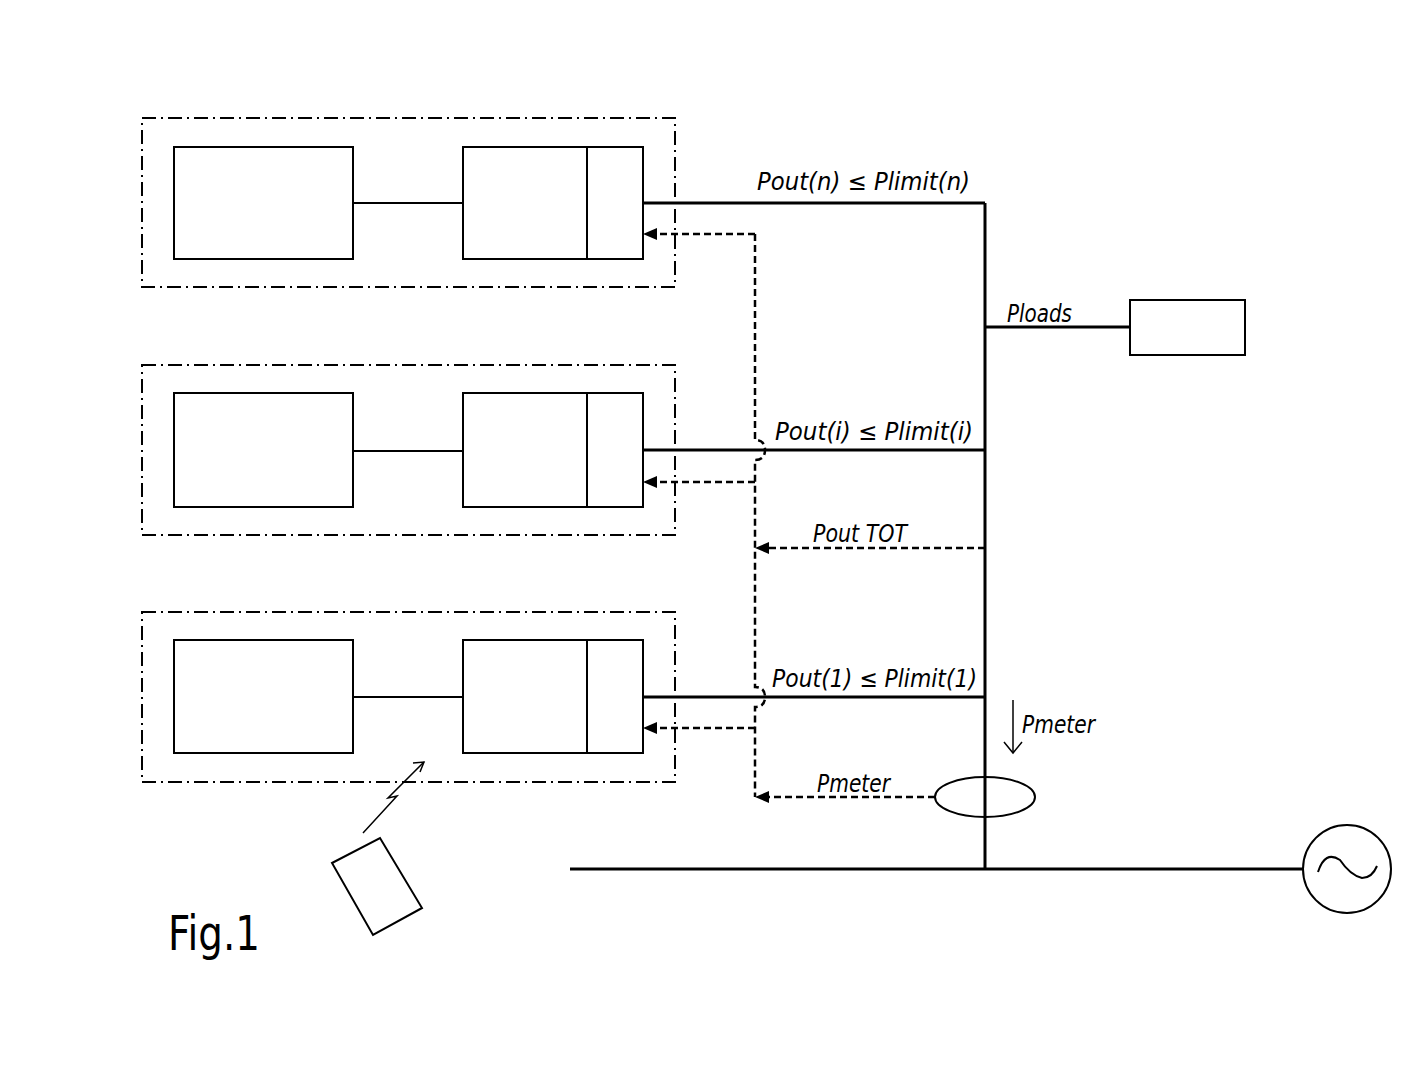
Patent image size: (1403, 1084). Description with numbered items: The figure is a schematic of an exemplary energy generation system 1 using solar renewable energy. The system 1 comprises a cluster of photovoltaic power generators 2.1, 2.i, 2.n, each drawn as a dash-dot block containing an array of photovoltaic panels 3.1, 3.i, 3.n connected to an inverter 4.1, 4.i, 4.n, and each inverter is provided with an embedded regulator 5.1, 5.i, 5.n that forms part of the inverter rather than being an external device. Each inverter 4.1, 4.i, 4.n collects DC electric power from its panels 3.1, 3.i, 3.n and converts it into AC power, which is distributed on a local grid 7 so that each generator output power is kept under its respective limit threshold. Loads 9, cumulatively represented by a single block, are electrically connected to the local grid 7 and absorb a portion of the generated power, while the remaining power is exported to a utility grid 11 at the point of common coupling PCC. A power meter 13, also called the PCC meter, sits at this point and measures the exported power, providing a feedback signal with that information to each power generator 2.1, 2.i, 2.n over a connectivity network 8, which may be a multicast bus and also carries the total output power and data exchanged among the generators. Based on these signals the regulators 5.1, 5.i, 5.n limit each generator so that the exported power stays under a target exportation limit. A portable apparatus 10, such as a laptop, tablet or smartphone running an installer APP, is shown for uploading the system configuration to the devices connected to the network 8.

The energy generation system 1 is at (1185, 178).
The photovoltaic power generator 2.n is at (138, 112).
The photovoltaic power generator 2.i is at (138, 359).
The photovoltaic power generator 2.1 is at (138, 606).
The array of photovoltaic panels 3.n is at (263, 203).
The array of photovoltaic panels 3.i is at (263, 450).
The array of photovoltaic panels 3.1 is at (263, 696).
The inverter 4.n is at (525, 203).
The inverter 4.i is at (525, 450).
The inverter 4.1 is at (525, 696).
The regulator 5.n is at (615, 203).
The regulator 5.i is at (615, 450).
The regulator 5.1 is at (615, 696).
The local grid 7 is at (985, 612).
The connectivity network 8 is at (755, 612).
The loads 9 is at (1188, 310).
The portable apparatus 10 is at (402, 910).
The utility grid 11 is at (1190, 867).
The power meter 13 is at (955, 813).
The point of common coupling PCC is at (987, 867).